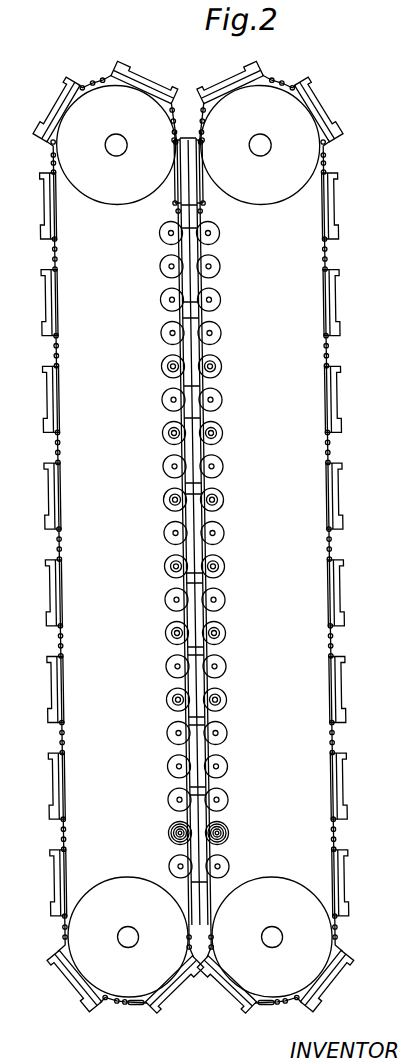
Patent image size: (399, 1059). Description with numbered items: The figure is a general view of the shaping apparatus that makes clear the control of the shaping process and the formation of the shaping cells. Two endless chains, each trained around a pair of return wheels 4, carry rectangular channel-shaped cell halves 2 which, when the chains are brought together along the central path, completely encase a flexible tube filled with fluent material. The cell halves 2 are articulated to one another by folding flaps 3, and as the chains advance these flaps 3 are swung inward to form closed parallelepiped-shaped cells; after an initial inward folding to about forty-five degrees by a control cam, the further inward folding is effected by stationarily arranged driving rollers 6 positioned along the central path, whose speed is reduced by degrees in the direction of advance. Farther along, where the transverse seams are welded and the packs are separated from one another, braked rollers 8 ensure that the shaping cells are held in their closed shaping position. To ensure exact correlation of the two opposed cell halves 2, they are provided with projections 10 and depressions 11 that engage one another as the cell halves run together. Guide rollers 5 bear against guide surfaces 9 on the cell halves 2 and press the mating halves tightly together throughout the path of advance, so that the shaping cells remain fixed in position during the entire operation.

The cell halves 2 is at (236, 80).
The folding flaps 3 is at (287, 82).
The return wheels 4 is at (118, 194).
The guide rollers 5 is at (216, 235).
The driving rollers 6 is at (154, 367).
The braked rollers 8 is at (156, 833).
The guide surfaces 9 is at (39, 213).
The projections 10 is at (35, 128).
The depressions 11 is at (66, 87).